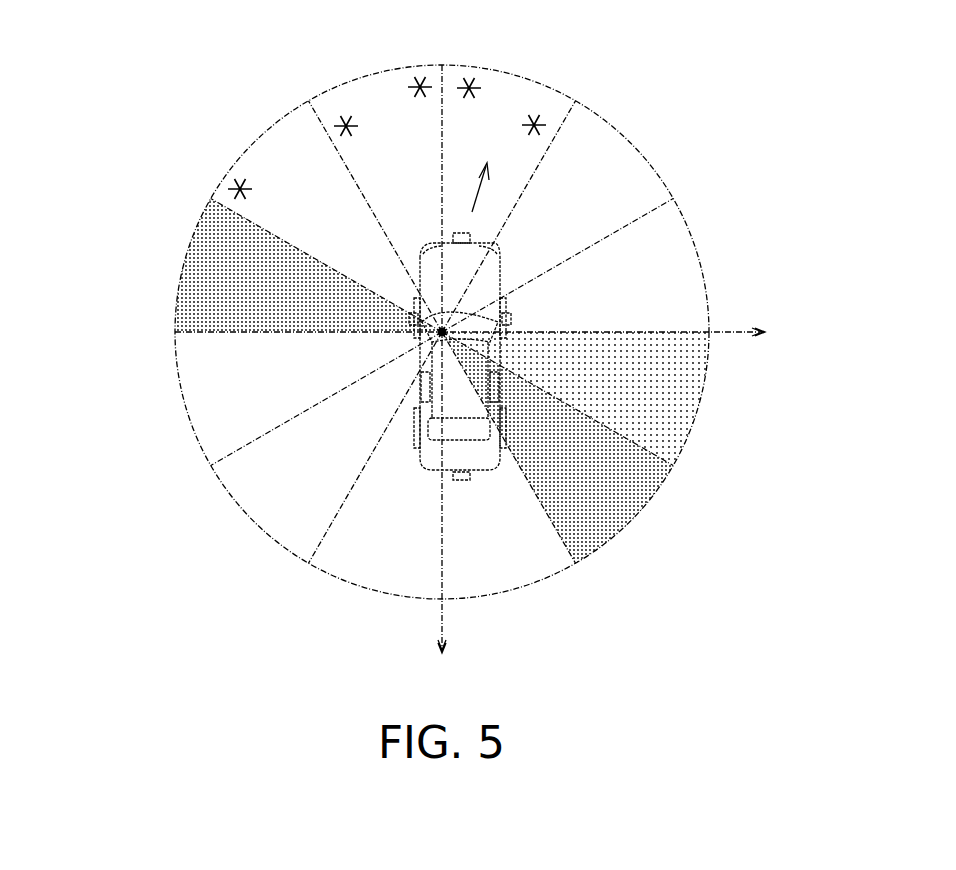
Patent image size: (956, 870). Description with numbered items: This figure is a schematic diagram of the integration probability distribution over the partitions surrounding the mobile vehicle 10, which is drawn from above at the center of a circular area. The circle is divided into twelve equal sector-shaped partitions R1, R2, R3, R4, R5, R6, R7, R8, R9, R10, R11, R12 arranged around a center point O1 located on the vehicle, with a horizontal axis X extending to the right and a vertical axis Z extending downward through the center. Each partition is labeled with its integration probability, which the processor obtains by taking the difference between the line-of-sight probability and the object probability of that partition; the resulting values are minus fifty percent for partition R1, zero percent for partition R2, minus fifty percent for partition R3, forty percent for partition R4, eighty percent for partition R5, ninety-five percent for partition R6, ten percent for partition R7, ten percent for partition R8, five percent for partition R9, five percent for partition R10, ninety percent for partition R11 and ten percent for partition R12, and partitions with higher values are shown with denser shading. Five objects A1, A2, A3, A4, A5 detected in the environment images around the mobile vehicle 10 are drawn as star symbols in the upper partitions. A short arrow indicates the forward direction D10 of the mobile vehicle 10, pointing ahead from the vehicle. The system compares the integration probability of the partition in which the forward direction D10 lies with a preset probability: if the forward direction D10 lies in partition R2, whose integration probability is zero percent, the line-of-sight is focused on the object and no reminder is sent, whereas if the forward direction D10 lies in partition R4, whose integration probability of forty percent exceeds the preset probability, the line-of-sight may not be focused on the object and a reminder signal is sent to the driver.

The mobile vehicle 10 is at (460, 478).
The origin / reference point of vehicle O1 is at (440, 331).
The forward direction D10 is at (486, 175).
The X axis X is at (479, 333).
The Z axis Z is at (442, 373).
The object A1 is at (534, 123).
The object A2 is at (469, 86).
The object A3 is at (420, 85).
The object A4 is at (346, 124).
The object A5 is at (240, 188).
The partition R1 is at (366, 75).
The partition R2 is at (524, 74).
The partition R3 is at (642, 152).
The partition R4 is at (700, 262).
The partition R5 is at (699, 402).
The partition R6 is at (632, 520).
The partition R7 is at (520, 587).
The partition R8 is at (366, 588).
The partition R9 is at (252, 520).
The partition R10 is at (185, 403).
The partition R11 is at (182, 270).
The partition R12 is at (258, 139).